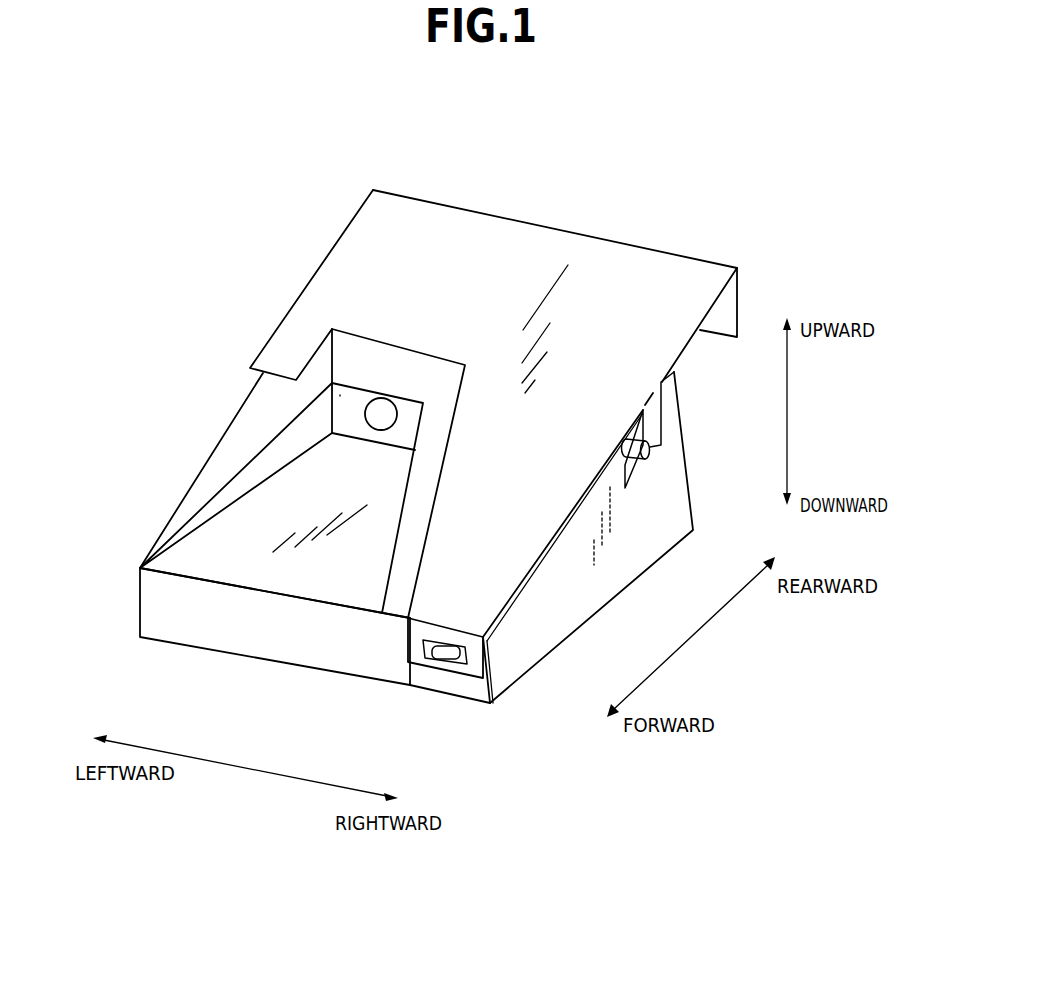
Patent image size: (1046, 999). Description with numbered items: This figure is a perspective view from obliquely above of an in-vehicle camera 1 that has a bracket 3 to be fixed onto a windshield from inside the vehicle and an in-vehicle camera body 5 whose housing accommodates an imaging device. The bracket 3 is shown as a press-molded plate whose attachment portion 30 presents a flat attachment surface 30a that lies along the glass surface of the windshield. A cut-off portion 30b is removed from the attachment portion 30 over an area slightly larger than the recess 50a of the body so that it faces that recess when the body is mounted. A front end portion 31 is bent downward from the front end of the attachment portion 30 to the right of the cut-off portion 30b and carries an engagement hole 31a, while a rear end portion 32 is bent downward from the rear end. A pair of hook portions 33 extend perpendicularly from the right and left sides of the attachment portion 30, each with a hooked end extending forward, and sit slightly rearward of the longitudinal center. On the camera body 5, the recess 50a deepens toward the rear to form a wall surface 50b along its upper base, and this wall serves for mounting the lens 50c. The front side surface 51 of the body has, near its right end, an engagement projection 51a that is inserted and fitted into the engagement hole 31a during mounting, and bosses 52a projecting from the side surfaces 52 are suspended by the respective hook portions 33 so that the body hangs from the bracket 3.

The in-vehicle camera 1 is at (624, 133).
The bracket 3 is at (690, 257).
The in-vehicle camera body 5 is at (695, 523).
The attachment portion 30 is at (543, 242).
The attachment surface 30a is at (545, 329).
The cut-off portion 30b is at (437, 472).
The front end portion 31 is at (488, 662).
The engagement hole 31a is at (458, 663).
The rear end portion 32 is at (741, 300).
The hook portion 33 is at (663, 410).
The recess 50a is at (403, 505).
The wall surface 50b is at (351, 407).
The lens 50c is at (381, 410).
The front side surface 51 is at (290, 647).
The engagement projection 51a is at (438, 660).
The side surface 52 is at (616, 578).
The boss 52a is at (652, 450).